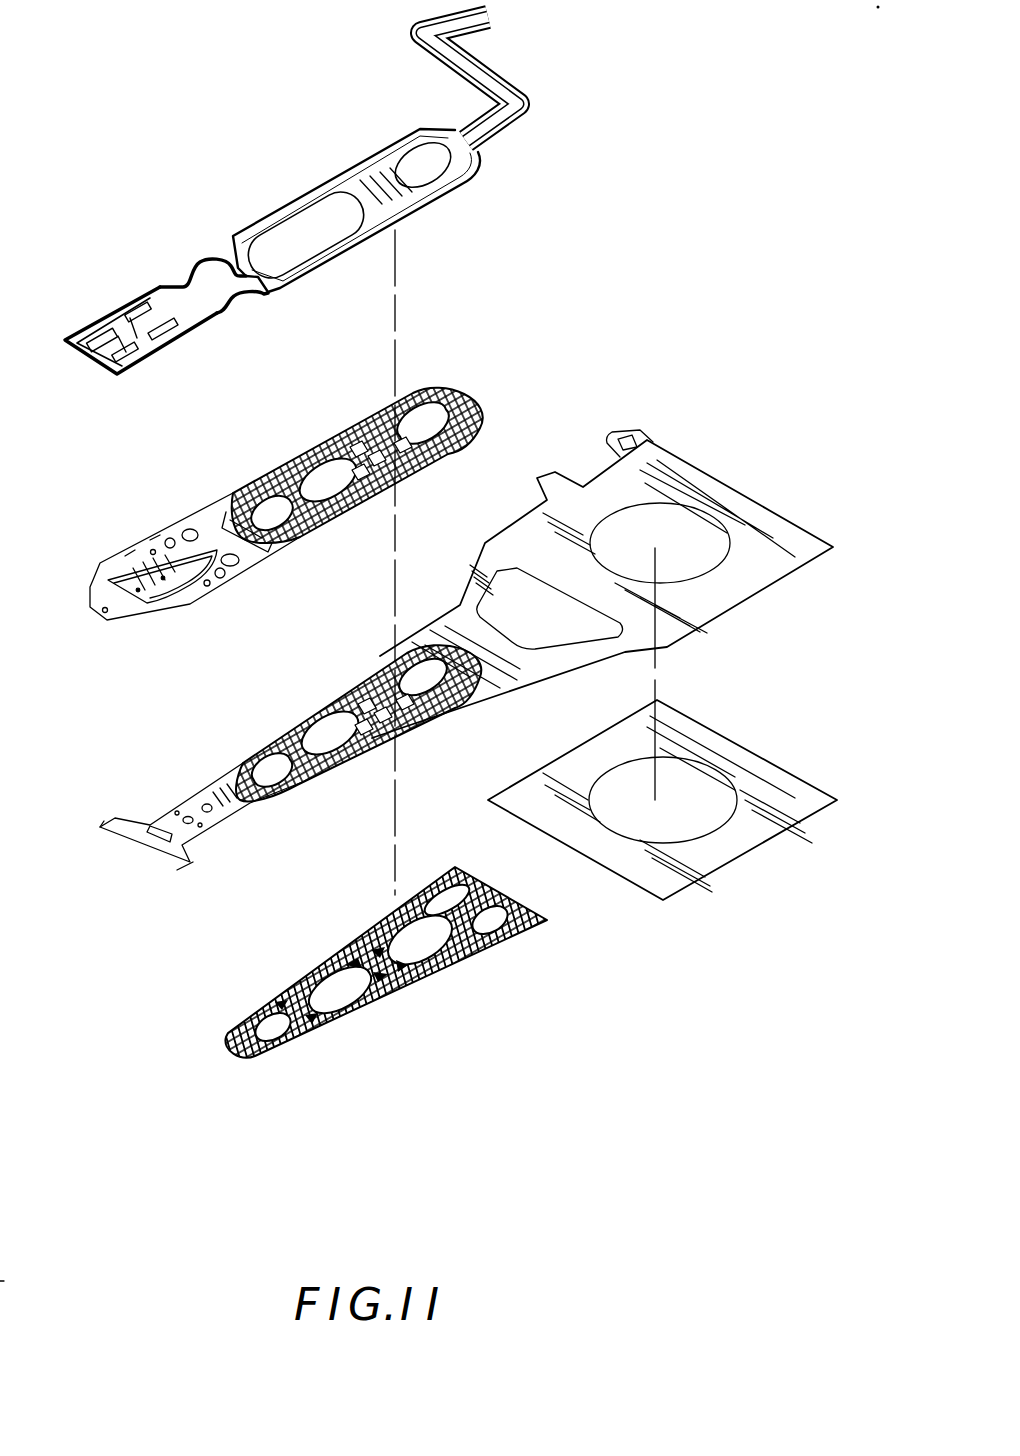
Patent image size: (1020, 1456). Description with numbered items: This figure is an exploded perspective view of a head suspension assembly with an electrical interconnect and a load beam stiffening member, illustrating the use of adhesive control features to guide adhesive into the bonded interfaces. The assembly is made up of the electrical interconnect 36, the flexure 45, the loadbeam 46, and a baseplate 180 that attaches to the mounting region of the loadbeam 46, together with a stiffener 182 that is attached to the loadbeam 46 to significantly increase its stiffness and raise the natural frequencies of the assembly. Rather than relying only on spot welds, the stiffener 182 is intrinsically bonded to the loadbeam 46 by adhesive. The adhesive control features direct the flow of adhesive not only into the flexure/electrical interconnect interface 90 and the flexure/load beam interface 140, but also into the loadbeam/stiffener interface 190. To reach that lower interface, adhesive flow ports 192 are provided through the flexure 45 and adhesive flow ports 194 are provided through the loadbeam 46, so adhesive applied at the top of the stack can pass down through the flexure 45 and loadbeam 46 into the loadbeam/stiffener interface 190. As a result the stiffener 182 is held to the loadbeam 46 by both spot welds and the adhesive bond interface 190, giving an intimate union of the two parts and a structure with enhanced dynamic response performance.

The electrical interconnect 36 is at (540, 88).
The flexure 45 is at (401, 417).
The loadbeam 46 is at (736, 463).
The flexure/electrical interconnect interface 90 is at (262, 479).
The flexure/load beam interface 140 is at (290, 741).
The baseplate 180 is at (750, 747).
The stiffener 182 is at (434, 962).
The loadbeam/stiffener interface 190 is at (380, 920).
The adhesive flow ports 192 is at (345, 428).
The adhesive flow ports 194 is at (352, 685).